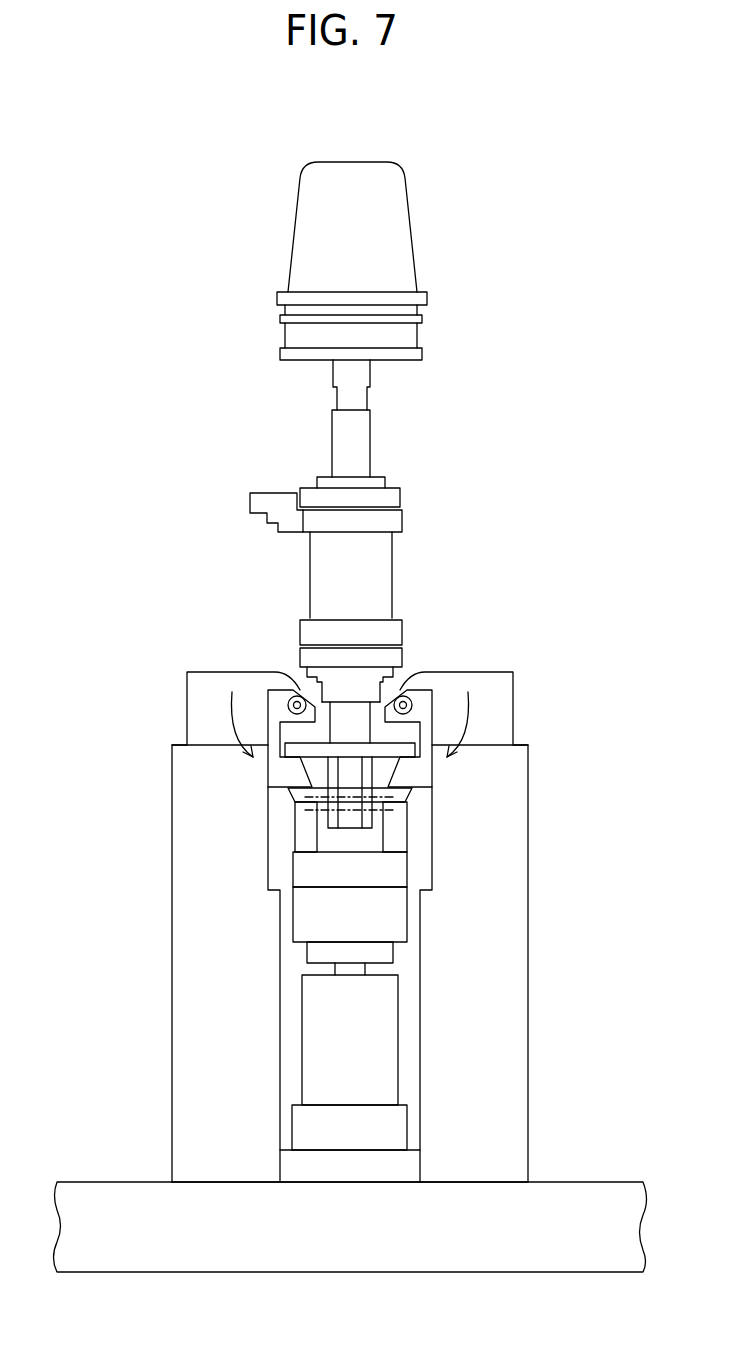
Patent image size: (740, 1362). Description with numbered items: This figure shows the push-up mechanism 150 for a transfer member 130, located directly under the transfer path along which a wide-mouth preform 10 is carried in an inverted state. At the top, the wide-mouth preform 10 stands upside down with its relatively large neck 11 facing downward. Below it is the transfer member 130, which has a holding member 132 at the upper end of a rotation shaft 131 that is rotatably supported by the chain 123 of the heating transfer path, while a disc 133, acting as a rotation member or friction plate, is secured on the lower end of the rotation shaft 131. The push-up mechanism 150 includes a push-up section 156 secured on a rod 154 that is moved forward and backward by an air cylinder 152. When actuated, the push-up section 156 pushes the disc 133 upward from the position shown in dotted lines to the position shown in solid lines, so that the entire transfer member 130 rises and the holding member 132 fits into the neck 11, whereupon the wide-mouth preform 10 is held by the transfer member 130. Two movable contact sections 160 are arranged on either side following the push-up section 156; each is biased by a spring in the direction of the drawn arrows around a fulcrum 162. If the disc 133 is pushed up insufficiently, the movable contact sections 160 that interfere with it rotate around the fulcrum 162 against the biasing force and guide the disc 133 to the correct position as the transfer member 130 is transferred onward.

The wide-mouth preform 10 is at (414, 220).
The neck 11 is at (412, 335).
The transfer member 130 is at (417, 545).
The rotation shaft 131 is at (362, 445).
The holding member 132 is at (385, 353).
The chain 123 is at (328, 523).
The disc 133 is at (345, 748).
The movable contact section 160 is at (280, 775).
The fulcrum 162 is at (297, 700).
The push-up mechanism 150 is at (400, 968).
The air cylinder 152 is at (378, 1046).
The rod 154 is at (340, 970).
The push-up section 156 is at (397, 828).